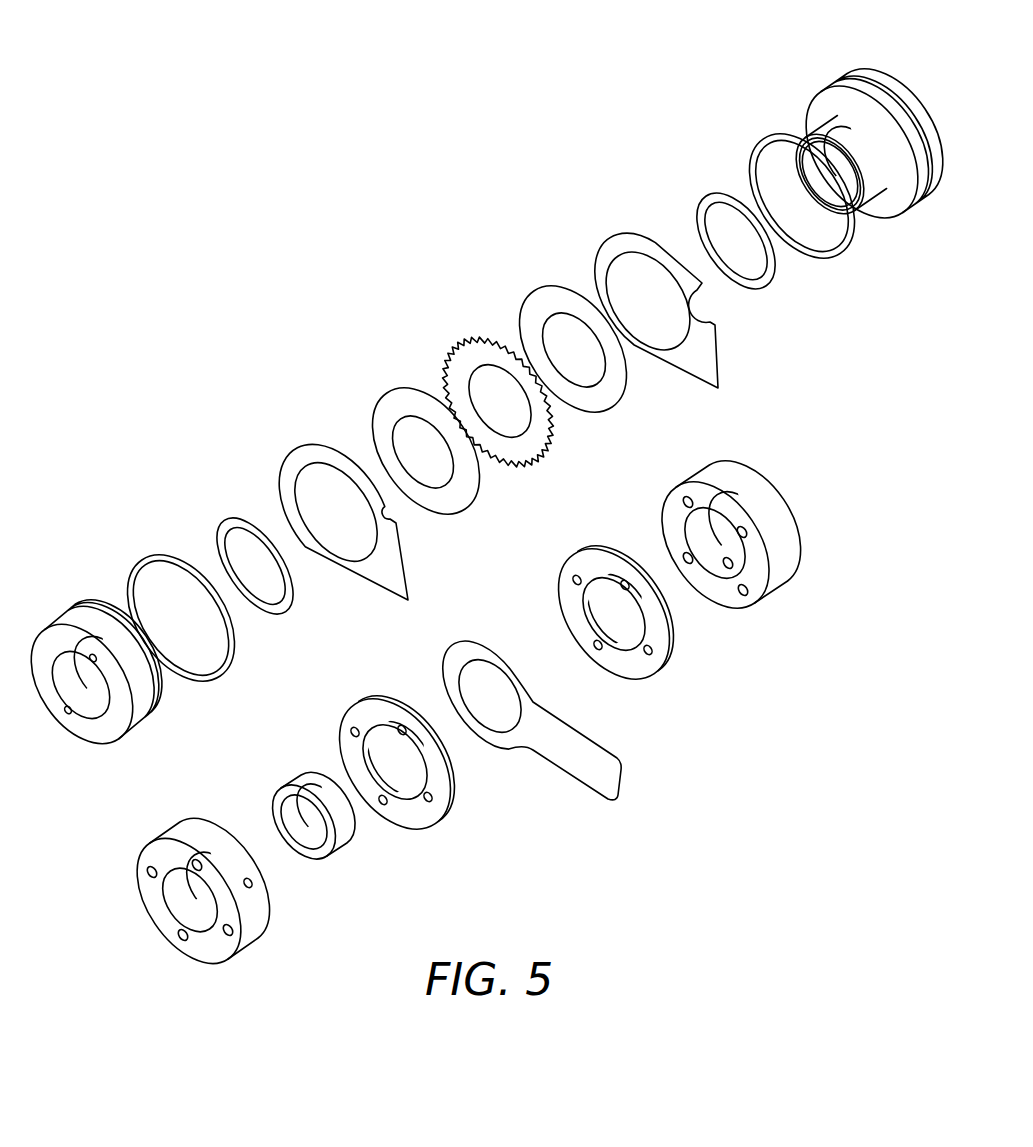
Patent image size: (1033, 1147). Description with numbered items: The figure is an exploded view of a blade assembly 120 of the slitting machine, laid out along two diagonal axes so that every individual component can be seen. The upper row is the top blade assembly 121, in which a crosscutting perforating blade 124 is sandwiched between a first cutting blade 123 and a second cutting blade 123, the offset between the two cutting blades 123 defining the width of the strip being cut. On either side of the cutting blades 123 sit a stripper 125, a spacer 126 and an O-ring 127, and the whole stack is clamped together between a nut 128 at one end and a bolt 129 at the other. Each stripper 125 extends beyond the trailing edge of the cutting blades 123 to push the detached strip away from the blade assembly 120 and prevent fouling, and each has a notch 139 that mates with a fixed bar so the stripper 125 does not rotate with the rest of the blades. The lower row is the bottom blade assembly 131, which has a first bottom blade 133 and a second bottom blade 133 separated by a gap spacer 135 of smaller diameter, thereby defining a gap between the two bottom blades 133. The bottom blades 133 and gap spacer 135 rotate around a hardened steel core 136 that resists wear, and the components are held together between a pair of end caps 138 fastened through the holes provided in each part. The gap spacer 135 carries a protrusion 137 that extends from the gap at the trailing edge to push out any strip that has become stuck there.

The blade assembly 120 is at (396, 226).
The top blade assembly 121 is at (690, 122).
The cutting blade 123 is at (387, 399).
The crosscutting perforating blade 124 is at (518, 466).
The stripper 125 is at (390, 582).
The spacer 126 is at (287, 613).
The O-ring 127 is at (221, 676).
The nut 128 is at (138, 727).
The bolt 129 is at (867, 82).
The bottom blade assembly 131 is at (690, 795).
The bottom blade 133 is at (431, 825).
The gap spacer 135 is at (492, 626).
The core 136 is at (338, 849).
The protrusion 137 is at (590, 781).
The end cap 138 is at (254, 948).
The notch 139 is at (412, 525).